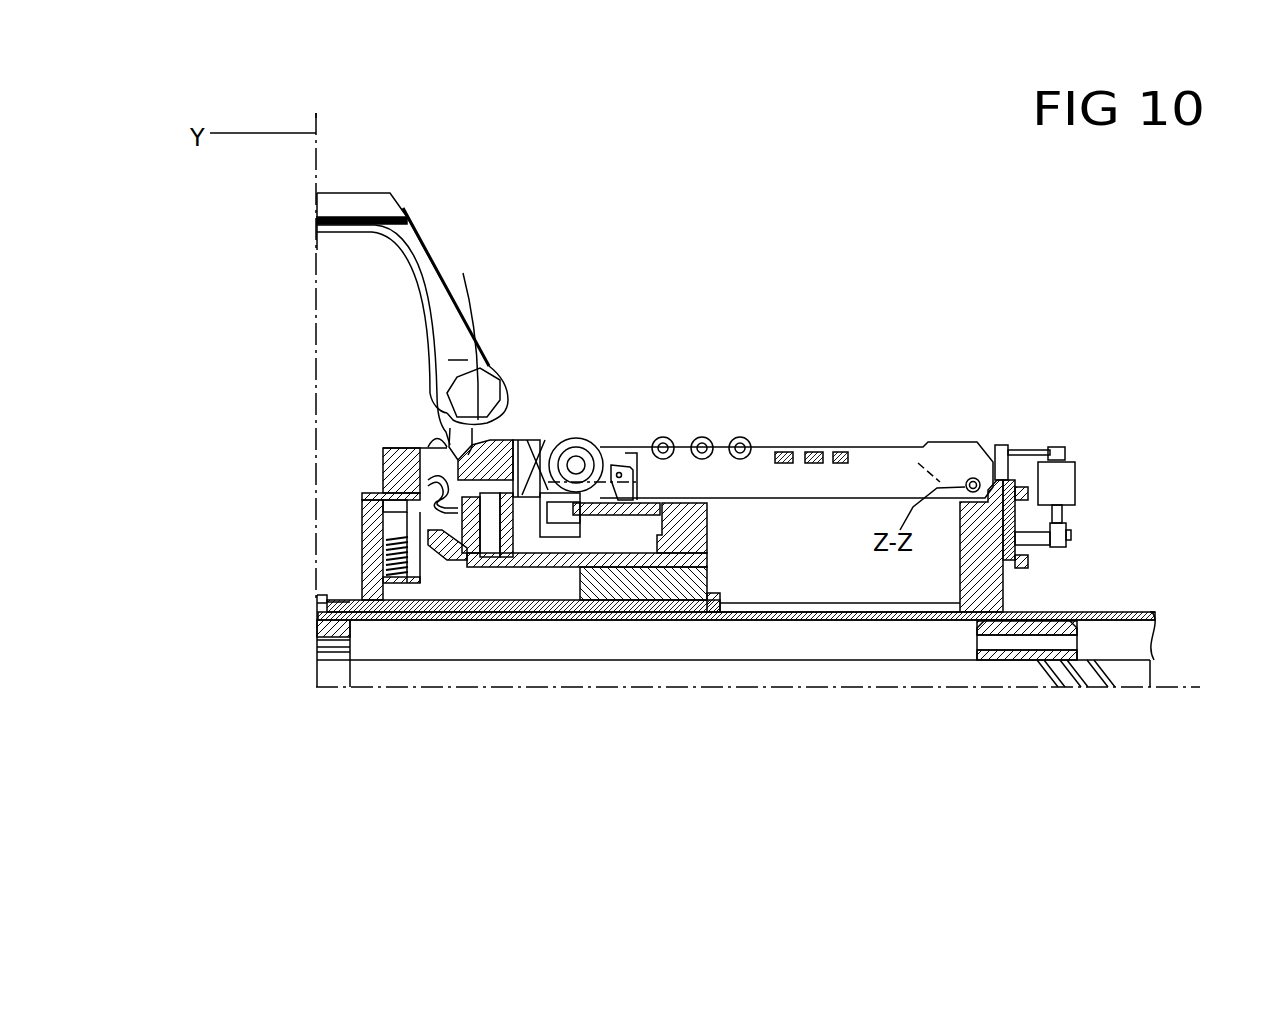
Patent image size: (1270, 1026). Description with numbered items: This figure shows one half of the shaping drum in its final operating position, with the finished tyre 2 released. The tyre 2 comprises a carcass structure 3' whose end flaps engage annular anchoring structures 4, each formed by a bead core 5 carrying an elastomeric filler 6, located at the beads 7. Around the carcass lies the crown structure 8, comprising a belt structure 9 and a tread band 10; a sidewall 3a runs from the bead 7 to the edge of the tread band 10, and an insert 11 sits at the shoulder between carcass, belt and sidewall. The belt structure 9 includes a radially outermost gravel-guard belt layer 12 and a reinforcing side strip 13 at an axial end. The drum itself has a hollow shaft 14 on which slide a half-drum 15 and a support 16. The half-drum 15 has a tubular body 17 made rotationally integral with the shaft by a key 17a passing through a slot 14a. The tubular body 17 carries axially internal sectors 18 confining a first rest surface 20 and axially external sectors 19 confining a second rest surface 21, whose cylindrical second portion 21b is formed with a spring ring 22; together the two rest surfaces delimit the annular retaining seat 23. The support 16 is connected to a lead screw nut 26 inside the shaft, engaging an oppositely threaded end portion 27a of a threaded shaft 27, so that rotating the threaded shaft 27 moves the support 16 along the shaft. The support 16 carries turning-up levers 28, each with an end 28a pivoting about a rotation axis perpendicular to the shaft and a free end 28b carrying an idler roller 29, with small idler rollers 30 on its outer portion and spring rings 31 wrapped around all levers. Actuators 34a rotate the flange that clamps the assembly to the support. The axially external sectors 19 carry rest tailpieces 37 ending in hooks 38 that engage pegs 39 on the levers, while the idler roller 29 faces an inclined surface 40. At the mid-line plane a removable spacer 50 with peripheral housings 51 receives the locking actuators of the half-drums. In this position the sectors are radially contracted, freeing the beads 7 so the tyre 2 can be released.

The tyre 2 is at (598, 186).
The carcass structure 3' is at (287, 284).
The sidewall 3a is at (453, 293).
The annular anchoring structure 4 is at (523, 371).
The bead core 5 is at (478, 417).
The elastomeric filler 6 is at (473, 375).
The bead 7 is at (524, 396).
The crown structure 8 is at (422, 164).
The belt structure 9 is at (407, 210).
The tread band 10 is at (365, 192).
The insert 11 is at (405, 236).
The belt layer 12 is at (333, 217).
The reinforcing side strip 13 is at (422, 208).
The hollow shaft 14 is at (845, 606).
The slot 14a is at (937, 615).
The half-drum 15 is at (672, 479).
The support 16 is at (1020, 428).
The tubular body 17 is at (710, 572).
The key 17a is at (727, 603).
The axially internal sector 18 is at (427, 437).
The axially external sector 19 is at (548, 440).
The first rest surface 20 is at (447, 432).
The second rest surface 21 is at (500, 437).
The second portion 21b is at (462, 449).
The spring ring 22 is at (470, 487).
The annular retaining seat 23 is at (490, 445).
The lead screw nut 26 is at (1057, 627).
The threaded shaft 27 is at (541, 686).
The end portion 27a is at (1105, 680).
The turning-up lever 28 is at (872, 443).
The lever end 28a is at (977, 447).
The free end 28b is at (666, 437).
The idler roller 29 is at (538, 440).
The small idler rollers 30 is at (740, 437).
The spring rings 31 is at (835, 450).
The actuator 34a is at (1080, 464).
The rest tailpiece 37 is at (613, 497).
The hook 38 is at (635, 463).
The peg 39 is at (633, 458).
The inclined surface 40 is at (510, 540).
The spacer 50 is at (333, 588).
The housing 51 is at (362, 540).